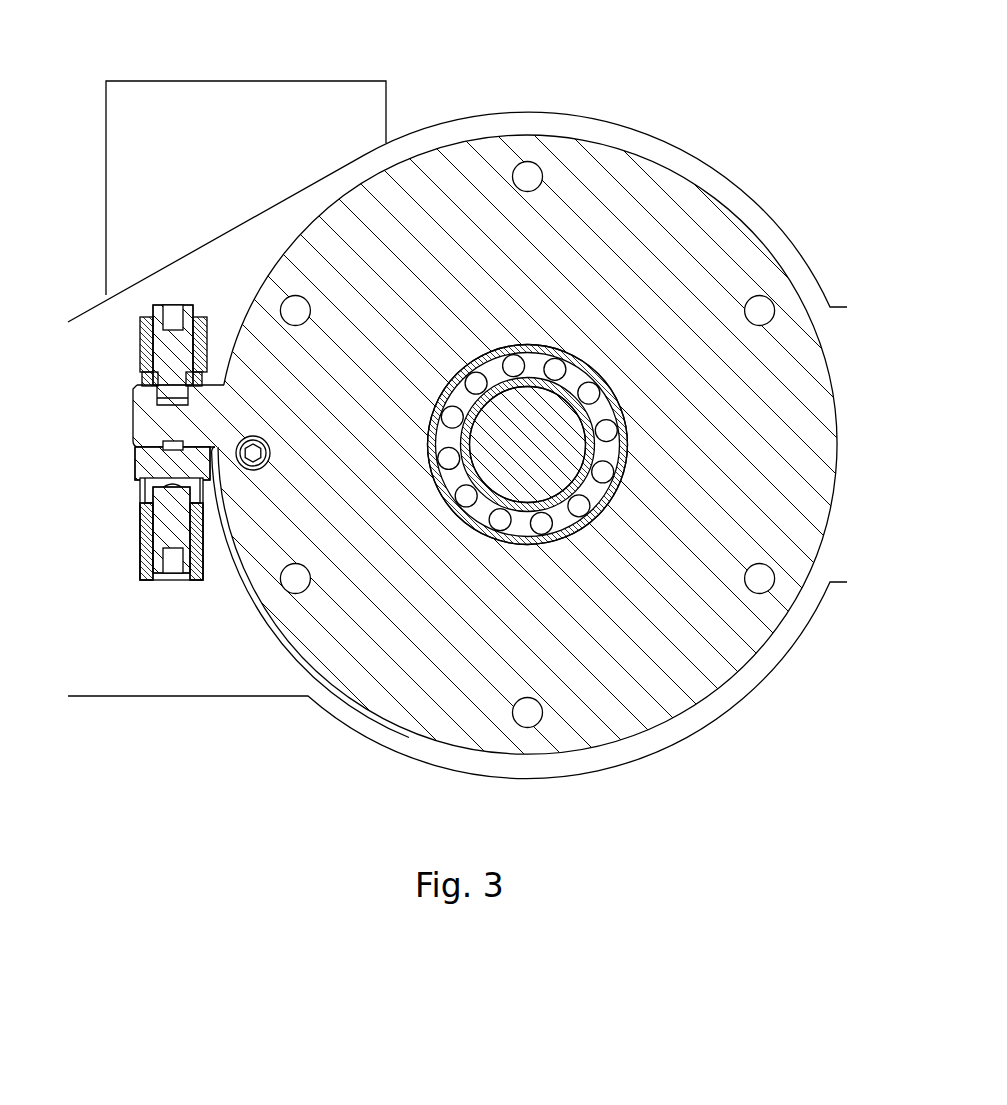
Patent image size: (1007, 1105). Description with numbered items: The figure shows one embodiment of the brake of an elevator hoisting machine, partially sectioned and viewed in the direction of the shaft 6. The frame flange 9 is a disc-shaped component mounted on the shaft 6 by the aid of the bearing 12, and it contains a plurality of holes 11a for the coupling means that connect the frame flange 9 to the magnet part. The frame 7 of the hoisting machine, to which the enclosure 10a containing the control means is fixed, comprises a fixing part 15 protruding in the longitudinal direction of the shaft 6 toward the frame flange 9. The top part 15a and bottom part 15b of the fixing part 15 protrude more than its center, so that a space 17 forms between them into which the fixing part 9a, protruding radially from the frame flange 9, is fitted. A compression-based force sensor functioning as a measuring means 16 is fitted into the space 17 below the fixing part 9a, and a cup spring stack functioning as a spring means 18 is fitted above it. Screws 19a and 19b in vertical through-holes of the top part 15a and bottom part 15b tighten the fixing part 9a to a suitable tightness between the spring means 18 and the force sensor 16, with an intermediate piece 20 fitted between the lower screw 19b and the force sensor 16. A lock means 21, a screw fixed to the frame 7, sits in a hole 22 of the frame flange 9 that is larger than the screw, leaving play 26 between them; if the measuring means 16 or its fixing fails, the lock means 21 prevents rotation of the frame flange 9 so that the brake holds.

The shaft 6 is at (538, 462).
The frame 7 is at (528, 112).
The frame flange 9 is at (670, 182).
The fixing part 9a is at (140, 431).
The enclosure 10a is at (242, 87).
The holes 11a is at (763, 583).
The bearing 12 is at (565, 522).
The fixing part 15 is at (104, 317).
The top part 15a is at (207, 328).
The bottom part 15b is at (205, 573).
The measuring means 16 is at (140, 467).
The space 17 is at (176, 419).
The spring means 18 is at (142, 376).
The screw 19a is at (157, 336).
The screw 19b is at (160, 580).
The intermediate piece 20 is at (142, 496).
The lock means 21 is at (262, 443).
The hole 22 is at (257, 472).
The play 26 is at (273, 458).